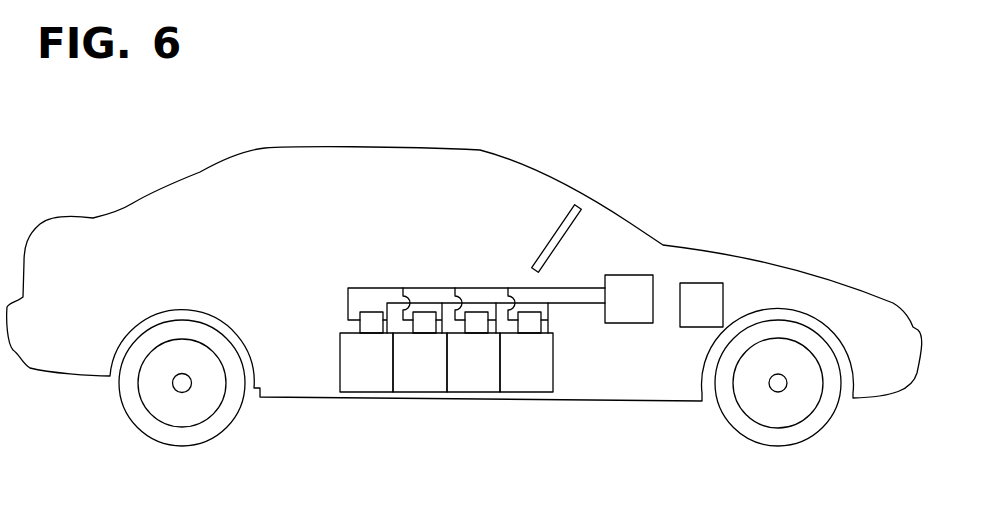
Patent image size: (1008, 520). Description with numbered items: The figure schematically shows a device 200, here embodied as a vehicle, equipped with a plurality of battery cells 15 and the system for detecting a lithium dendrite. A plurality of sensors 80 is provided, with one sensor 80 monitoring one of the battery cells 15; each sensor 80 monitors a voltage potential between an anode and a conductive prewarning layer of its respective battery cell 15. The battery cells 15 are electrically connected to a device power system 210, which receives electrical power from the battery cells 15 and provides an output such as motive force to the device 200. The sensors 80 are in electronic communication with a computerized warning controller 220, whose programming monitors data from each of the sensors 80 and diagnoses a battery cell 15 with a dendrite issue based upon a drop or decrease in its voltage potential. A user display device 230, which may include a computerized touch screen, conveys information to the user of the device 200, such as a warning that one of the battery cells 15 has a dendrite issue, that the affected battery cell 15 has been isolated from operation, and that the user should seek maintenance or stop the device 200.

The device 200 is at (387, 147).
The battery cells 15 is at (370, 392).
The sensors 80 is at (422, 312).
The device power system 210 is at (625, 275).
The computerized warning controller 220 is at (700, 283).
The user display device 230 is at (574, 206).